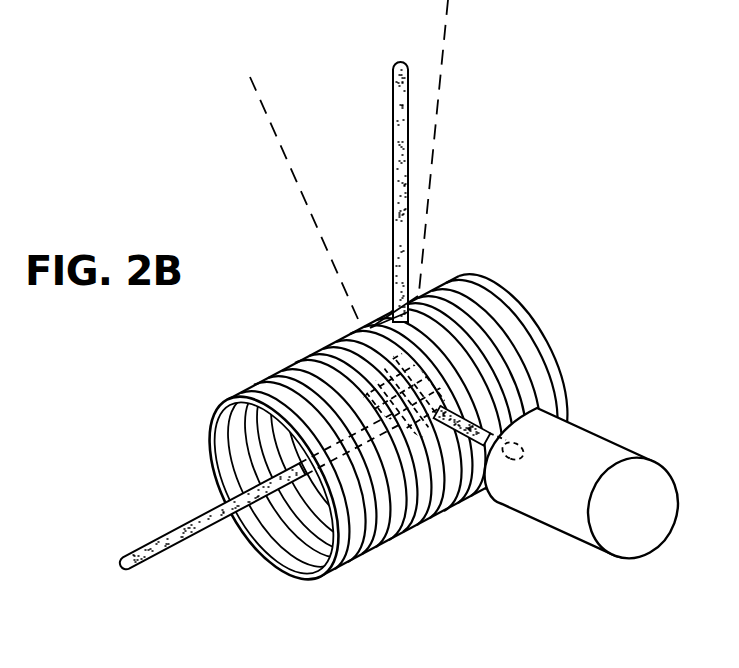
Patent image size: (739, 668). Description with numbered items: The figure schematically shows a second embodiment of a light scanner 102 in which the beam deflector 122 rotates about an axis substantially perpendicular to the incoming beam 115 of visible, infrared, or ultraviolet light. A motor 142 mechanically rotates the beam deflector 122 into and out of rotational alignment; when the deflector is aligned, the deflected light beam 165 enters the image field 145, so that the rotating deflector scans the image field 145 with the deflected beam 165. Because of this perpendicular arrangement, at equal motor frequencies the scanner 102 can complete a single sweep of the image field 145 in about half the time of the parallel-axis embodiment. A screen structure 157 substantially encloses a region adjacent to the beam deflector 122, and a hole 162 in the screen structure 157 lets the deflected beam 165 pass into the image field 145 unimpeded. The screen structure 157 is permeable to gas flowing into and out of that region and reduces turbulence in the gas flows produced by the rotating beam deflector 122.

The light scanner 102 is at (375, 360).
The incoming beam 115 is at (182, 545).
The beam deflector 122 is at (430, 445).
The motor 142 is at (577, 500).
The image field 145 is at (354, 83).
The screen structure 157 is at (273, 378).
The hole 162 is at (374, 299).
The deflected light beam 165 is at (394, 157).